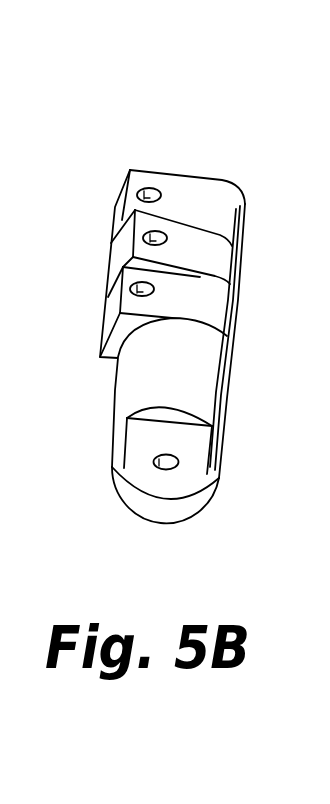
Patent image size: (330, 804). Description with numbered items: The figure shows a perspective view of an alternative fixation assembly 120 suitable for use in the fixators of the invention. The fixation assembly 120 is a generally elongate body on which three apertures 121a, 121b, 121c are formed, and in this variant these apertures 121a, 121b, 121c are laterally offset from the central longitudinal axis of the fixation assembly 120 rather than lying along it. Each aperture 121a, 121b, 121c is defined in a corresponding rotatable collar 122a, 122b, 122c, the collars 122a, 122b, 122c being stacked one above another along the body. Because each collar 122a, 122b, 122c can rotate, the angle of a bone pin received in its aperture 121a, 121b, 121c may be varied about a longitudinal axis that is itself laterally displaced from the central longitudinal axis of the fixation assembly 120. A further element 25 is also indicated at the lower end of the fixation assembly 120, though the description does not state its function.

The fixation assembly 120 is at (172, 296).
The aperture 121a is at (145, 238).
The aperture 121b is at (137, 195).
The aperture 121c is at (130, 290).
The rotatable collar 122a is at (217, 263).
The rotatable collar 122b is at (223, 223).
The rotatable collar 122c is at (207, 310).
The pin 25 is at (157, 477).